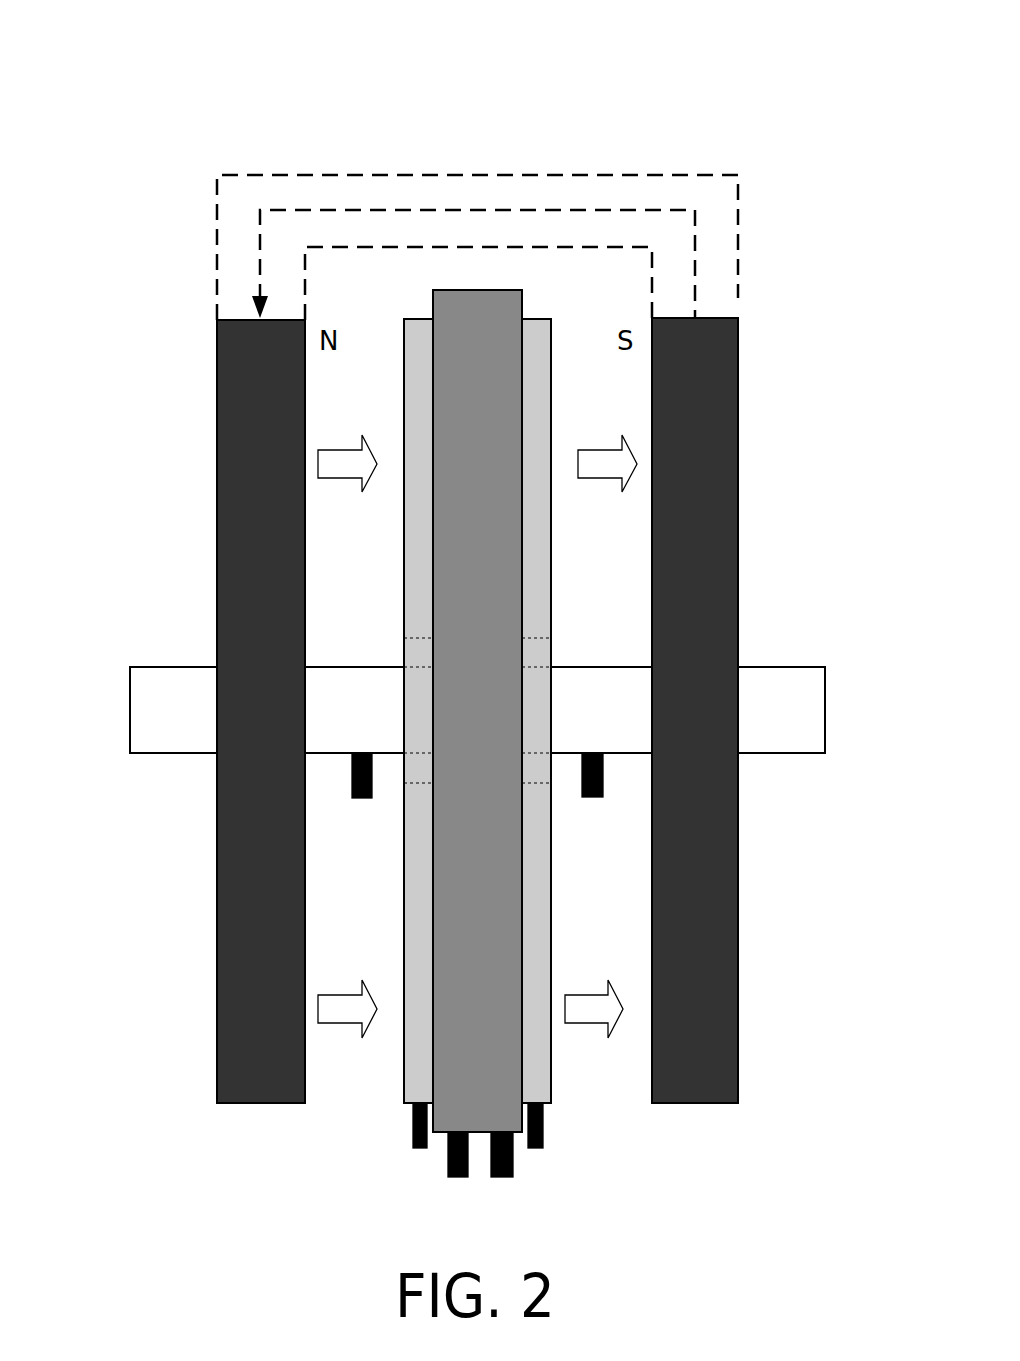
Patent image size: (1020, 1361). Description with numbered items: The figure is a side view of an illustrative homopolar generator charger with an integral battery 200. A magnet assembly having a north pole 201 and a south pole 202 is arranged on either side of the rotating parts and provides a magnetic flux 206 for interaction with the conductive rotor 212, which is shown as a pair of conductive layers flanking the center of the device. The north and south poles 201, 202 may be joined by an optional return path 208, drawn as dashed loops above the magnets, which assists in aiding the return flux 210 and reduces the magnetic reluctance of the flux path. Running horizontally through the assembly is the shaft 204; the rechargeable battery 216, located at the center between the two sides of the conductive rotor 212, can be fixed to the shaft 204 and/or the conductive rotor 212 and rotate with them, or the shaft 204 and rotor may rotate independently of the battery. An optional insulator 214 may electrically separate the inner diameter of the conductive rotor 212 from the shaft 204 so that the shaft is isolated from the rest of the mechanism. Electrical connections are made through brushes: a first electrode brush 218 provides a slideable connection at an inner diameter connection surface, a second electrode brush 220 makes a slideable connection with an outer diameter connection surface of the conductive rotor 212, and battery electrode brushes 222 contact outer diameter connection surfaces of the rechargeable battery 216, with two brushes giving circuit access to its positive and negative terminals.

The homopolar generator with integral battery 200 is at (450, 85).
The north pole 201 is at (217, 386).
The south pole 202 is at (738, 385).
The shaft 204 is at (130, 724).
The magnetic flux 206 is at (332, 472).
The return path 208 is at (738, 270).
The return flux 210 is at (522, 210).
The conductive rotor 212 is at (418, 340).
The insulator 214 is at (385, 646).
The rechargeable battery 216 is at (497, 300).
The first electrode brush 218 is at (358, 778).
The second electrode brush 220 is at (418, 1148).
The battery electrode brushes 222 is at (456, 1177).